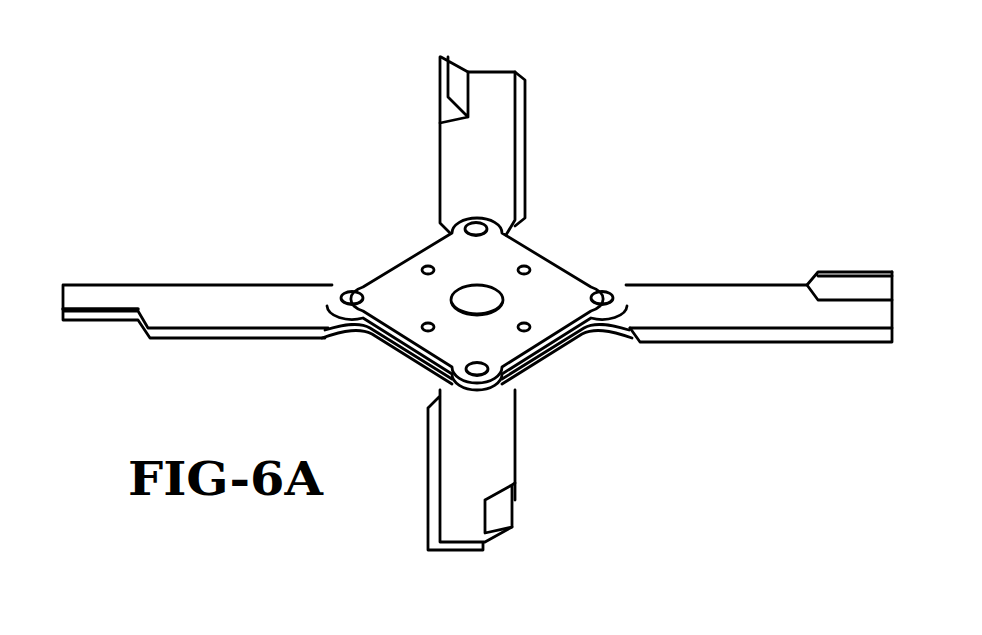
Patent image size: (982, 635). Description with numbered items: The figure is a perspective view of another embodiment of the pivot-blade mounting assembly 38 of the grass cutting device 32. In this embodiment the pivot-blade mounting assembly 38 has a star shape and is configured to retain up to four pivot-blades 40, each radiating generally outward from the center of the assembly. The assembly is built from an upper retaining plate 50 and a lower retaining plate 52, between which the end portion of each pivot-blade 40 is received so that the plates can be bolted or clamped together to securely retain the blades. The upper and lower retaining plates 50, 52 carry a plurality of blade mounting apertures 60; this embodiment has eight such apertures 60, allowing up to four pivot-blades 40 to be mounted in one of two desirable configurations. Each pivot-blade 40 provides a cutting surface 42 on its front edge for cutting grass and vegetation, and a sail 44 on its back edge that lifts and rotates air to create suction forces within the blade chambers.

The grass cutting device 32 is at (655, 152).
The pivot-blade mounting assembly 38 is at (670, 173).
The pivot-blade 40 is at (440, 150).
The cutting surface 42 is at (517, 115).
The sail 44 is at (443, 57).
The upper retaining plate 50 is at (380, 281).
The lower retaining plate 52 is at (402, 356).
The blade mounting apertures 60 is at (427, 264).